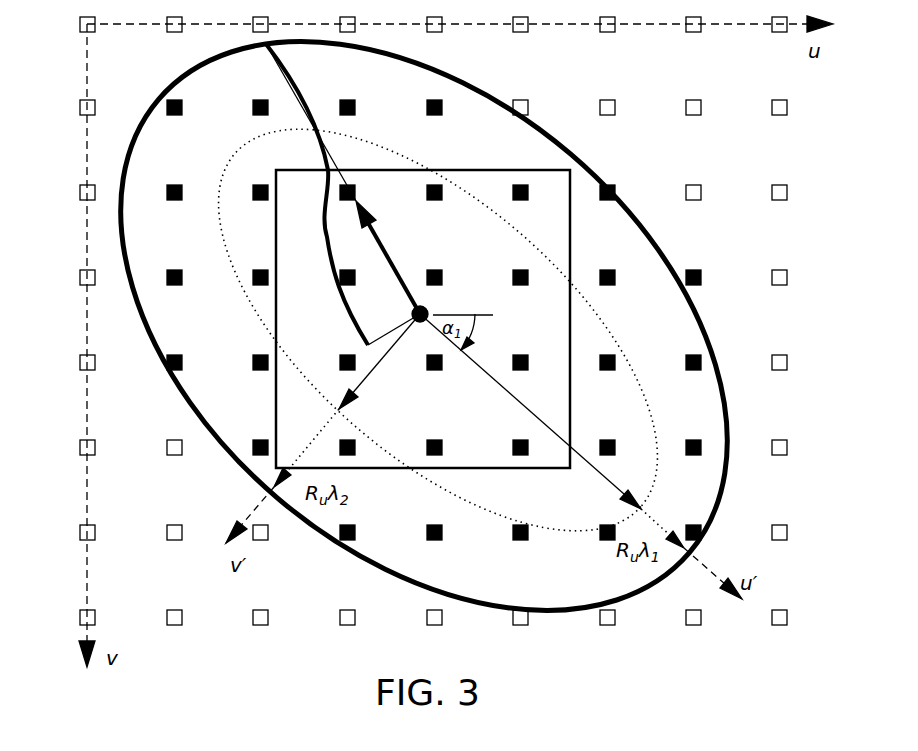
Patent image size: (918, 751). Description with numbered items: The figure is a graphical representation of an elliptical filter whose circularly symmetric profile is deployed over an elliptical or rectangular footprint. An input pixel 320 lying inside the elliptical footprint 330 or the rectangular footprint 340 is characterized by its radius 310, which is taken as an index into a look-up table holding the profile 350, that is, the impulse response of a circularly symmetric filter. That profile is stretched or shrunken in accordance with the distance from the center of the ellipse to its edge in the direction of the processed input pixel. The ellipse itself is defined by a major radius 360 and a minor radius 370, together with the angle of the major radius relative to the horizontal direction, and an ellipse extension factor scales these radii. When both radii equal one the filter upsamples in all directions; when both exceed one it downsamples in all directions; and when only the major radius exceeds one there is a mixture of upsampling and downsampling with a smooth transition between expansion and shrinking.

The radius 310 is at (392, 258).
The input pixel 320 is at (360, 185).
The elliptical footprint 330 is at (483, 88).
The rectangular footprint 340 is at (580, 185).
The profile 350 is at (322, 238).
The major radius 360 is at (473, 368).
The minor radius 370 is at (393, 357).